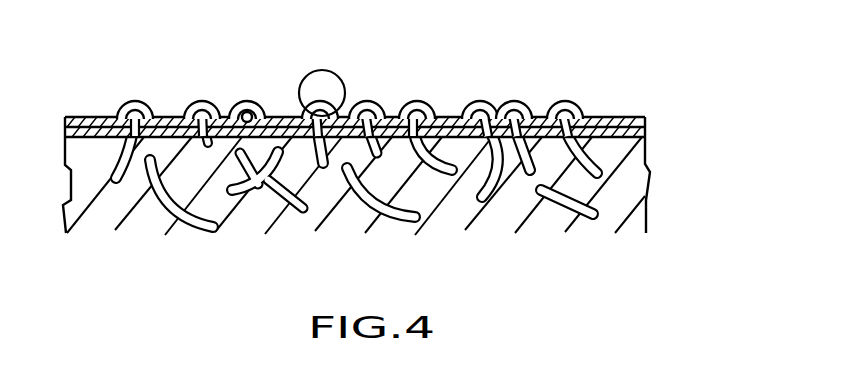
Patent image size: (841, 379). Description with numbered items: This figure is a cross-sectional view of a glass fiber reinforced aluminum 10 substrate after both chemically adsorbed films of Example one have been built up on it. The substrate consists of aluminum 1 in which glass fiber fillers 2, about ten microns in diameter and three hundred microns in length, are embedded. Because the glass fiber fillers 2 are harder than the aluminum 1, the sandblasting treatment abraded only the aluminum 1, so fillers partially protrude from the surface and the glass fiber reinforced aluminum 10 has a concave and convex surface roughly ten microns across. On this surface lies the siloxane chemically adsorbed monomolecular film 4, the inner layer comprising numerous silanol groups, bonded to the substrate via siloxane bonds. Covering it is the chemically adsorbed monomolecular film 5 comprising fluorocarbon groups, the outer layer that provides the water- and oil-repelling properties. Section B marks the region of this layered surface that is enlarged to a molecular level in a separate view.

The aluminum 1 is at (608, 223).
The glass fiber fillers 2 is at (543, 215).
The siloxane chemically adsorbed monomolecular film 4 is at (645, 127).
The chemically adsorbed monomolecular film comprising fluorocarbon groups 5 is at (600, 113).
The glass fiber reinforced aluminum 10 is at (409, 166).
The section B is at (323, 70).